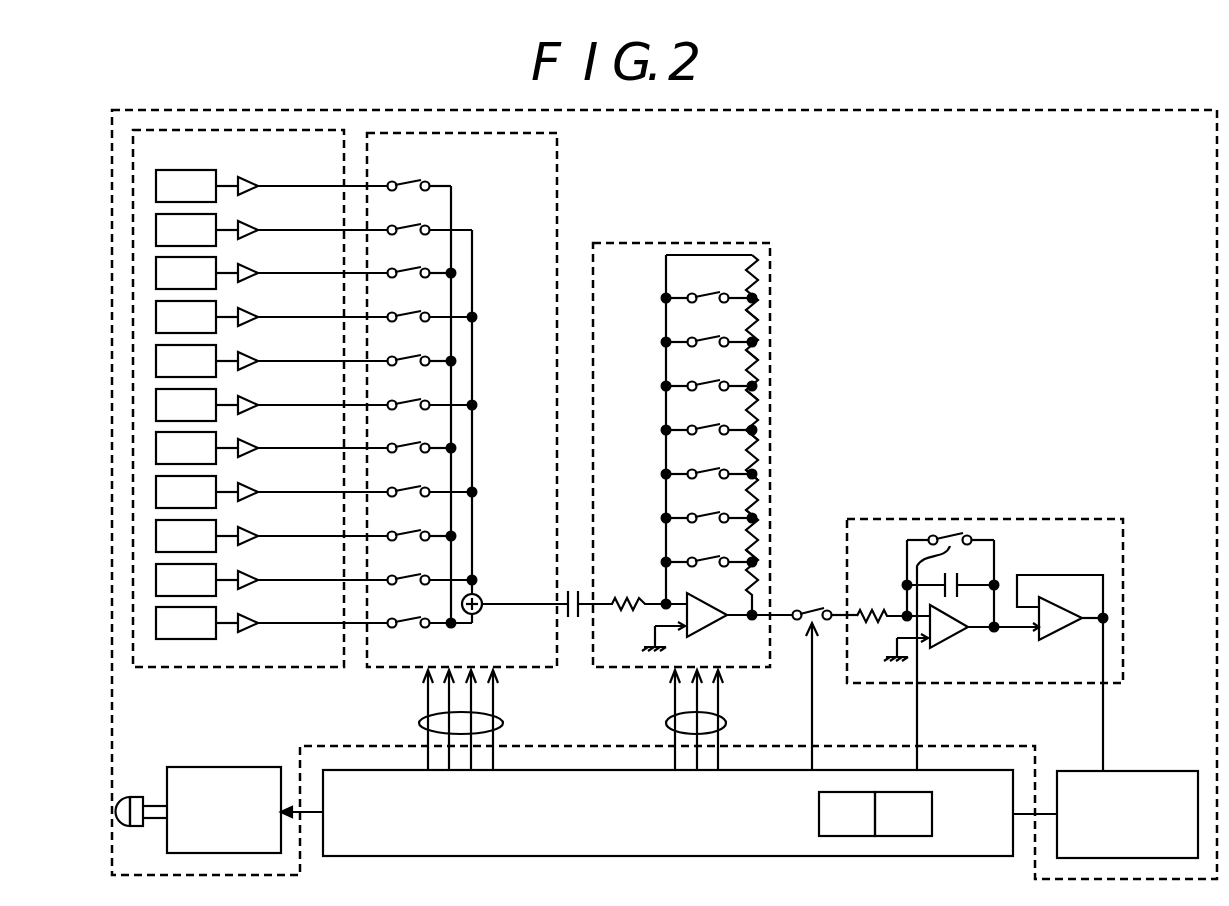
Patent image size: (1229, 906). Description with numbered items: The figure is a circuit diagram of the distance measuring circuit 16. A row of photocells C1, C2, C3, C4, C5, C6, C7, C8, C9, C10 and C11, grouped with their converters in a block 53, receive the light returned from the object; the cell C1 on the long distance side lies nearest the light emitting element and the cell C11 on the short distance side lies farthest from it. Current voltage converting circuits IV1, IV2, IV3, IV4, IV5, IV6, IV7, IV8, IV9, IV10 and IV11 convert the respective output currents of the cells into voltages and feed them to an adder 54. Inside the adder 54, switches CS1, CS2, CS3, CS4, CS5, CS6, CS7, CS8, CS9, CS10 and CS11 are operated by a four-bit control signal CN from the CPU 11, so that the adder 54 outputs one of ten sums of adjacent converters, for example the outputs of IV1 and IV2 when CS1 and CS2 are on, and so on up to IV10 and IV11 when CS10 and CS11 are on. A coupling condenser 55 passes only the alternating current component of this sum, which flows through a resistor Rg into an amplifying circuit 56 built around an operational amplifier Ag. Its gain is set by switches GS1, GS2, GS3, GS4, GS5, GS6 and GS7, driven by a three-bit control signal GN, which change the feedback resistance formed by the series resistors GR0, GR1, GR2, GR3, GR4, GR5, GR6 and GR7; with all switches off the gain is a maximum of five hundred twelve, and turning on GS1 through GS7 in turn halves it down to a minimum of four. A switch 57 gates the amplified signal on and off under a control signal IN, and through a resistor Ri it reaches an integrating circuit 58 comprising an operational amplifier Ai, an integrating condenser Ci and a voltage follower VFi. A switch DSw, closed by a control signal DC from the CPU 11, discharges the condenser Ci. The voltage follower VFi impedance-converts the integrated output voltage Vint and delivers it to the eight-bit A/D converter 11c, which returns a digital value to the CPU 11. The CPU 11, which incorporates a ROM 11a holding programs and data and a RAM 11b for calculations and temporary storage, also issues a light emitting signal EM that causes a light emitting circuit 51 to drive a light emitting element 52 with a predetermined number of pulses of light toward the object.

The distance measuring circuit 16 is at (112, 762).
The input circuit block 53 is at (328, 668).
The adder 54 is at (557, 198).
The coupling condenser 55 is at (573, 617).
The amplifying circuit 56 is at (712, 243).
The switch 57 is at (795, 625).
The integrating circuit 58 is at (885, 519).
The light emitting circuit 51 is at (212, 767).
The light emitting element 52 is at (132, 797).
The CPU 11 is at (990, 771).
The ROM 11a is at (819, 814).
The RAM 11b is at (932, 814).
The A/D converter 11c is at (1095, 771).
The cell C1 is at (156, 184).
The cell C2 is at (156, 228).
The cell C3 is at (156, 271).
The cell C4 is at (156, 315).
The cell C5 is at (156, 359).
The cell C6 is at (156, 403).
The cell C7 is at (156, 446).
The cell C8 is at (156, 490).
The cell C9 is at (156, 534).
The cell C10 is at (156, 578).
The cell C11 is at (156, 621).
The current voltage converting circuit IV1 is at (260, 178).
The current voltage converting circuit IV2 is at (260, 222).
The current voltage converting circuit IV3 is at (260, 265).
The current voltage converting circuit IV4 is at (260, 309).
The current voltage converting circuit IV5 is at (260, 353).
The current voltage converting circuit IV6 is at (260, 397).
The current voltage converting circuit IV7 is at (260, 440).
The current voltage converting circuit IV8 is at (260, 484).
The current voltage converting circuit IV9 is at (260, 528).
The current voltage converting circuit IV10 is at (260, 572).
The current voltage converting circuit IV11 is at (260, 615).
The switch CS1 is at (427, 181).
The switch CS2 is at (427, 225).
The switch CS3 is at (427, 268).
The switch CS4 is at (427, 312).
The switch CS5 is at (427, 356).
The switch CS6 is at (427, 400).
The switch CS7 is at (427, 443).
The switch CS8 is at (427, 487).
The switch CS9 is at (427, 531).
The switch CS10 is at (427, 575).
The switch CS11 is at (427, 628).
The switch GS1 is at (680, 298).
The switch GS2 is at (680, 342).
The switch GS3 is at (680, 386).
The switch GS4 is at (680, 430).
The switch GS5 is at (680, 474).
The switch GS6 is at (680, 518).
The switch GS7 is at (680, 562).
The gain resistor 0 GR0 is at (753, 268).
The gain resistor 1 GR1 is at (753, 312).
The gain resistor 2 GR2 is at (753, 356).
The gain resistor 3 GR3 is at (753, 400).
The gain resistor 4 GR4 is at (753, 444).
The gain resistor 5 GR5 is at (753, 488).
The gain resistor 6 GR6 is at (753, 532).
The gain resistor 7 GR7 is at (753, 576).
The gain input resistor Rg is at (650, 601).
The operational amplifier Ag is at (708, 628).
The integrator input resistor Ri is at (866, 627).
The operational amplifier Ai is at (950, 640).
The integrating condenser Ci is at (953, 570).
The switch DSw is at (955, 539).
The output voltage Vint is at (1063, 574).
The voltage follower VFi is at (1062, 632).
The control signal CN is at (504, 723).
The control signal GN is at (666, 724).
The control signal IN is at (812, 705).
The control signal DC is at (917, 705).
The light emitting signal EM is at (293, 805).